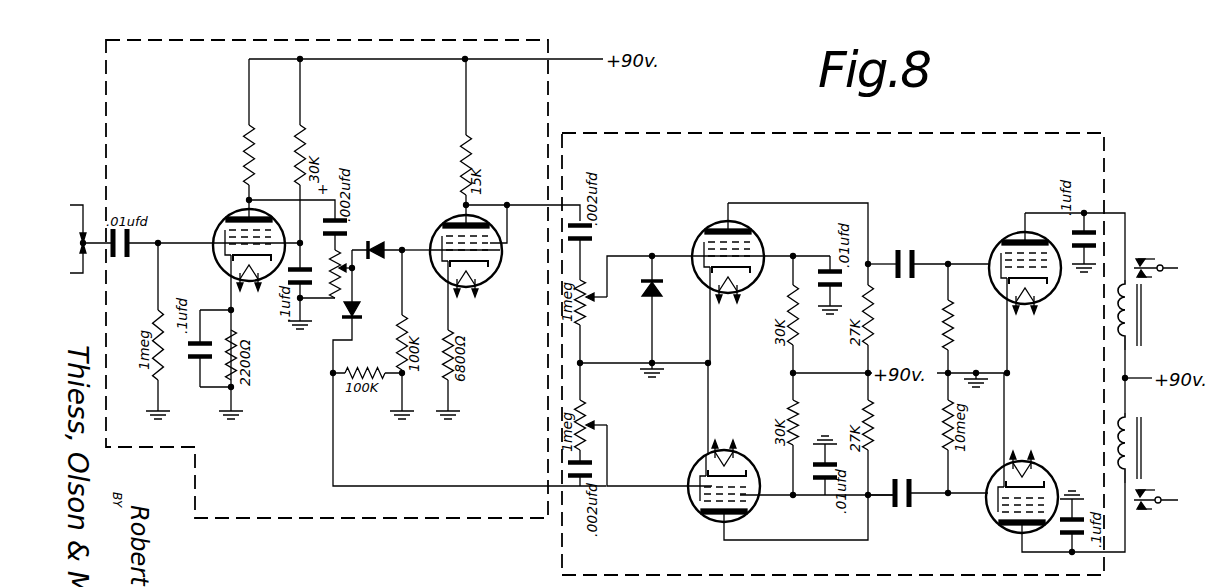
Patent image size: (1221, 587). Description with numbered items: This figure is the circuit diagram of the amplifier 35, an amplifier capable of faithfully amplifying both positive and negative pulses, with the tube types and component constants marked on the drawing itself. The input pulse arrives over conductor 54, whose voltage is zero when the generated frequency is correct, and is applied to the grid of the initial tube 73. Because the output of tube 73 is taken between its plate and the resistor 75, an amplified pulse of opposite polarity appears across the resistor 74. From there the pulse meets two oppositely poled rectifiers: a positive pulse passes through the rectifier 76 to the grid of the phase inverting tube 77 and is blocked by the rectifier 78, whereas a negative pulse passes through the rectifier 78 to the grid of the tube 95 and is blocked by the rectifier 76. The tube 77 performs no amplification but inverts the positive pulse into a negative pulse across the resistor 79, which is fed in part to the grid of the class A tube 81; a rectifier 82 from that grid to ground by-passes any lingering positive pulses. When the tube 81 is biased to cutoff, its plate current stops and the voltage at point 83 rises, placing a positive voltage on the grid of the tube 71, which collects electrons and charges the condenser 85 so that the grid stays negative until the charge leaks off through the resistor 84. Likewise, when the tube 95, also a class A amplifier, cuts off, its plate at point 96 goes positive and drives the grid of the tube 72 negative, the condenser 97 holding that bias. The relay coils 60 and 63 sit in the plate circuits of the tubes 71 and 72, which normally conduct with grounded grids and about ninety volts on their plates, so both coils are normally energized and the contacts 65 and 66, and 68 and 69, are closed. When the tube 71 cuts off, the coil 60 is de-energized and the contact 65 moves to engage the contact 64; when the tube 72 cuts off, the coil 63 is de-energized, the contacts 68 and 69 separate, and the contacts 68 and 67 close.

The amplifier 35 is at (716, 21).
The conductor 54 is at (96, 245).
The initial tube 73 is at (226, 224).
The resistor 74 is at (354, 266).
The resistor 75 is at (246, 153).
The rectifier 76 is at (382, 242).
The phase inverting tube 77 is at (490, 285).
The rectifier 78 is at (336, 312).
The resistor 79 is at (589, 301).
The tube 81 is at (702, 232).
The rectifier 82 is at (666, 298).
The point 83 is at (879, 258).
The resistor 84 is at (942, 322).
The condenser 85 is at (905, 278).
The tube 95 is at (696, 511).
The point 96 is at (902, 507).
The condenser 97 is at (900, 478).
The amplifier tube 71 is at (997, 238).
The amplifier tube 72 is at (992, 520).
The relay coil 60 is at (1144, 318).
The relay coil 63 is at (1142, 446).
The contact 64 is at (1146, 256).
The contact 65 is at (1163, 266).
The contact 66 is at (1152, 277).
The contact 67 is at (1147, 512).
The contact 68 is at (1162, 502).
The contact 69 is at (1152, 490).